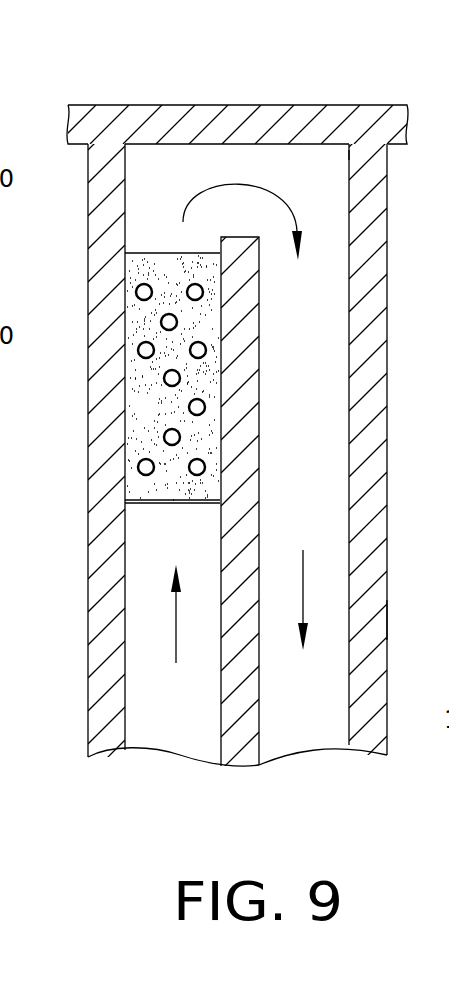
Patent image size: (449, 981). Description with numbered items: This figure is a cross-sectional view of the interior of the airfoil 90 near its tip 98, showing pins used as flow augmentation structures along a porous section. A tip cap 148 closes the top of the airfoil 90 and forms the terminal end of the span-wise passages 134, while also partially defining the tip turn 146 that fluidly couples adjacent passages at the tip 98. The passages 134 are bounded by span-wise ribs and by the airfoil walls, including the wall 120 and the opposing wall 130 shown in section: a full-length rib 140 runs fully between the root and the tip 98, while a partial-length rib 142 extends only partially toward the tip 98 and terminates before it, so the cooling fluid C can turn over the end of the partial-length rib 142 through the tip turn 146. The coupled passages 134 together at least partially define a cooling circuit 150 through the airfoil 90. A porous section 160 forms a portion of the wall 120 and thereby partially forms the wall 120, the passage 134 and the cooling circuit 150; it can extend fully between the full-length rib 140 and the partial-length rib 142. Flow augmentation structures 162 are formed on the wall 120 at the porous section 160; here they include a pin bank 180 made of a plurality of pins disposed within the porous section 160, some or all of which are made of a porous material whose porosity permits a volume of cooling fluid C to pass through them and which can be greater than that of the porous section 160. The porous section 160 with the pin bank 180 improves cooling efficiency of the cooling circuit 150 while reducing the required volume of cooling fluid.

The airfoil 90 is at (178, 80).
The tip 98 is at (325, 103).
The tip cap 148 is at (360, 110).
The wall 120 is at (298, 157).
The pin bank 180 is at (152, 262).
The flow augmentation structure 162 is at (150, 403).
The full-length rib 140 is at (87, 428).
The porous section 160 is at (128, 495).
The cooling circuit 150 is at (165, 745).
The partial-length rib 142 is at (259, 731).
The outer housing wall 130 is at (322, 680).
The passage 134 is at (324, 461).
The tip turn 146 is at (387, 620).